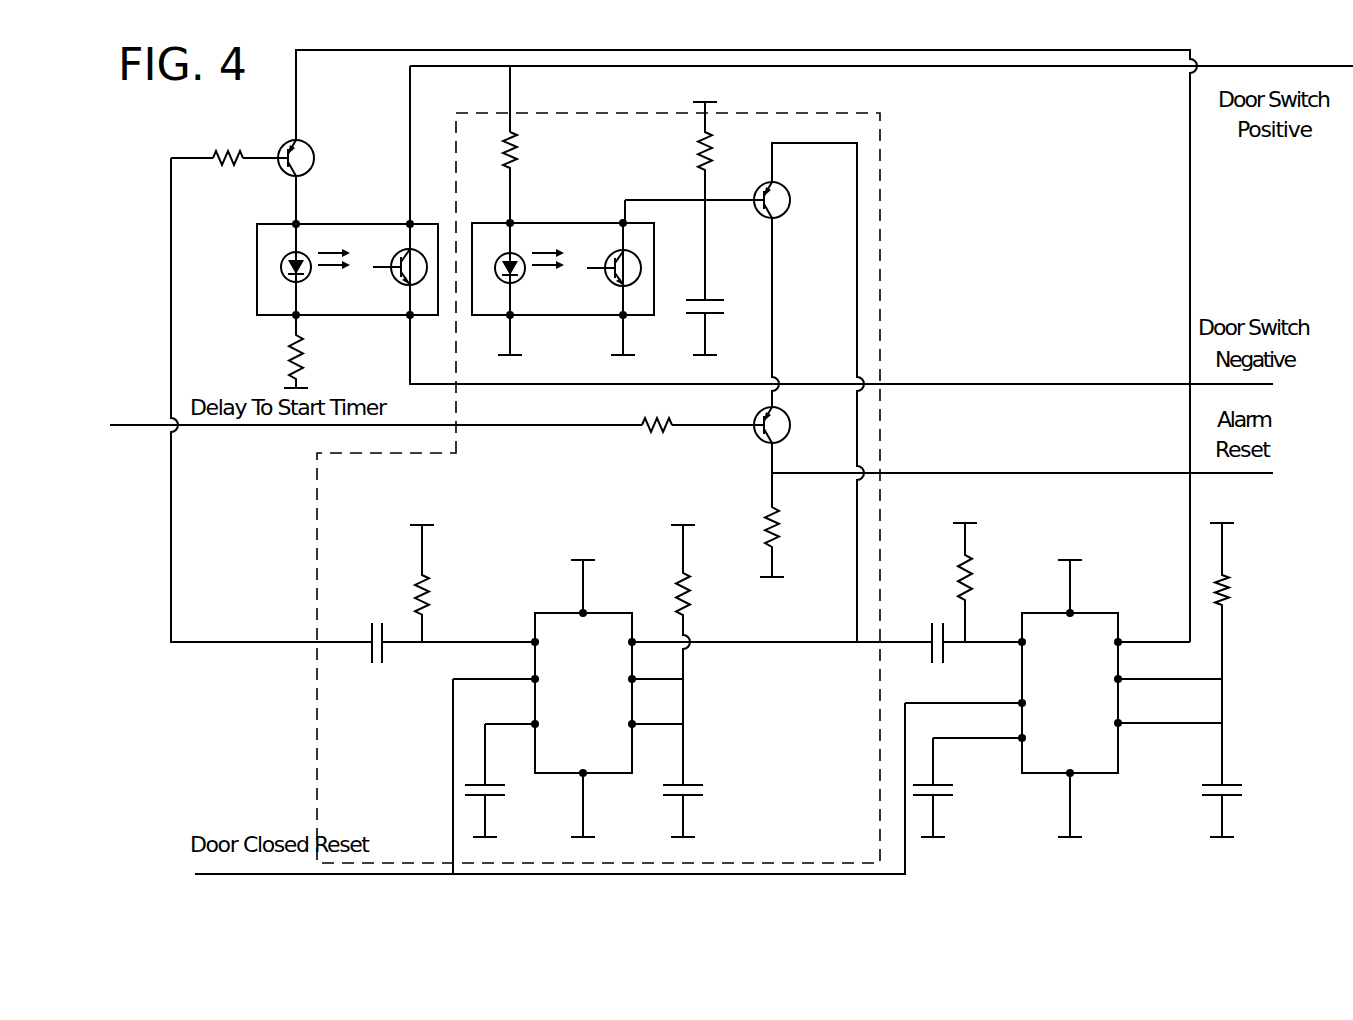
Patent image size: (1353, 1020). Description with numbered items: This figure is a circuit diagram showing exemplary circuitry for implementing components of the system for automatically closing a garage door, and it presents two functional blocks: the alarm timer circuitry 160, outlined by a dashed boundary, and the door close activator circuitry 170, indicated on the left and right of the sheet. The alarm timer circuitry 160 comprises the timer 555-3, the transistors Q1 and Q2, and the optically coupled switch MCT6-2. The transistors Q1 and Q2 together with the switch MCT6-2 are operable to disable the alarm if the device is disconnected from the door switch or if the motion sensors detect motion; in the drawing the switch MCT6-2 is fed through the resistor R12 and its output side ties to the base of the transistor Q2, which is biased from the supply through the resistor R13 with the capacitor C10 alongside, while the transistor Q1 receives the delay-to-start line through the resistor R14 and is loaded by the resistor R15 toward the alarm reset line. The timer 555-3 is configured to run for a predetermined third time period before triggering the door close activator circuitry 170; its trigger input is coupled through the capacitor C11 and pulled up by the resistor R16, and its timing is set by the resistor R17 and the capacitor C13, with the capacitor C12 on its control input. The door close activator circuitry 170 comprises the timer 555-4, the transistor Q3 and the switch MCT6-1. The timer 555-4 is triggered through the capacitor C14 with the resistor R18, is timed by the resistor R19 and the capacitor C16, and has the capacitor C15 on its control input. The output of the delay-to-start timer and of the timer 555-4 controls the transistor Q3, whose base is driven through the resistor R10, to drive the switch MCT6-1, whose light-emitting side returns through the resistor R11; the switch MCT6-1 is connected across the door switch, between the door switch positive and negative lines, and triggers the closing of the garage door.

The alarm timer circuitry 160 is at (880, 275).
The door close activator circuitry 170 is at (236, 127).
The transistor Q1 is at (802, 430).
The transistor Q2 is at (801, 206).
The transistor Q3 is at (331, 159).
The resistor R10 is at (225, 174).
The resistor R11 is at (318, 351).
The resistor R12 is at (535, 170).
The resistor R13 is at (722, 186).
The resistor R14 is at (656, 439).
The resistor R15 is at (795, 510).
The resistor R16 is at (446, 569).
The resistor R17 is at (703, 640).
The resistor R18 is at (989, 567).
The resistor R19 is at (1247, 640).
The capacitor C10 is at (691, 314).
The capacitor C11 is at (388, 649).
The capacitor C12 is at (508, 780).
The capacitor C13 is at (704, 796).
The capacitor C14 is at (924, 660).
The capacitor C15 is at (956, 787).
The capacitor C16 is at (1242, 796).
The switch MCT6-1 is at (347, 257).
The switch MCT6-2 is at (563, 258).
The timer 555-3 is at (580, 683).
The timer 555-4 is at (1081, 683).